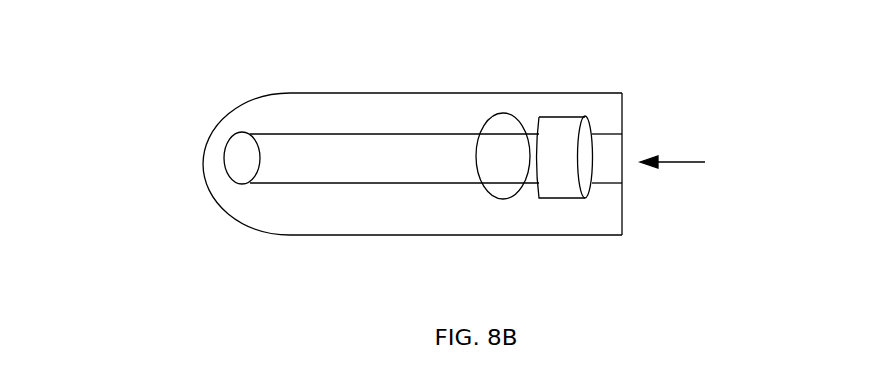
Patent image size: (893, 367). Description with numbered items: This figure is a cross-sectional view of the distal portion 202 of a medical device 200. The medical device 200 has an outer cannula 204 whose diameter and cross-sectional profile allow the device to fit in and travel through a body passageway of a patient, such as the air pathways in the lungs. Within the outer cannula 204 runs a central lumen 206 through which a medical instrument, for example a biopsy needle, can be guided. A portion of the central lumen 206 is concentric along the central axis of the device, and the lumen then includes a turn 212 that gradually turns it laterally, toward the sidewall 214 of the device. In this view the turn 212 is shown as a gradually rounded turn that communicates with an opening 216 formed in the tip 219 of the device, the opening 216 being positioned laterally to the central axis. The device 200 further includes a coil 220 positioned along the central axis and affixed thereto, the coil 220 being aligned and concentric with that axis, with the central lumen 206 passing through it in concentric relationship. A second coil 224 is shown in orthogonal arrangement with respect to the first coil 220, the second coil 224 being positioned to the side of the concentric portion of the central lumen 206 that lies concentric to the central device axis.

The medical device 200 is at (437, 37).
The distal portion 202 is at (304, 60).
The outer cannula 204 is at (613, 262).
The central lumen 206 is at (697, 165).
The turn 212 is at (293, 220).
The sidewall 214 is at (352, 271).
The opening 216 is at (237, 142).
The tip 219 is at (170, 209).
The coil 220 is at (588, 125).
The second coil 224 is at (455, 52).